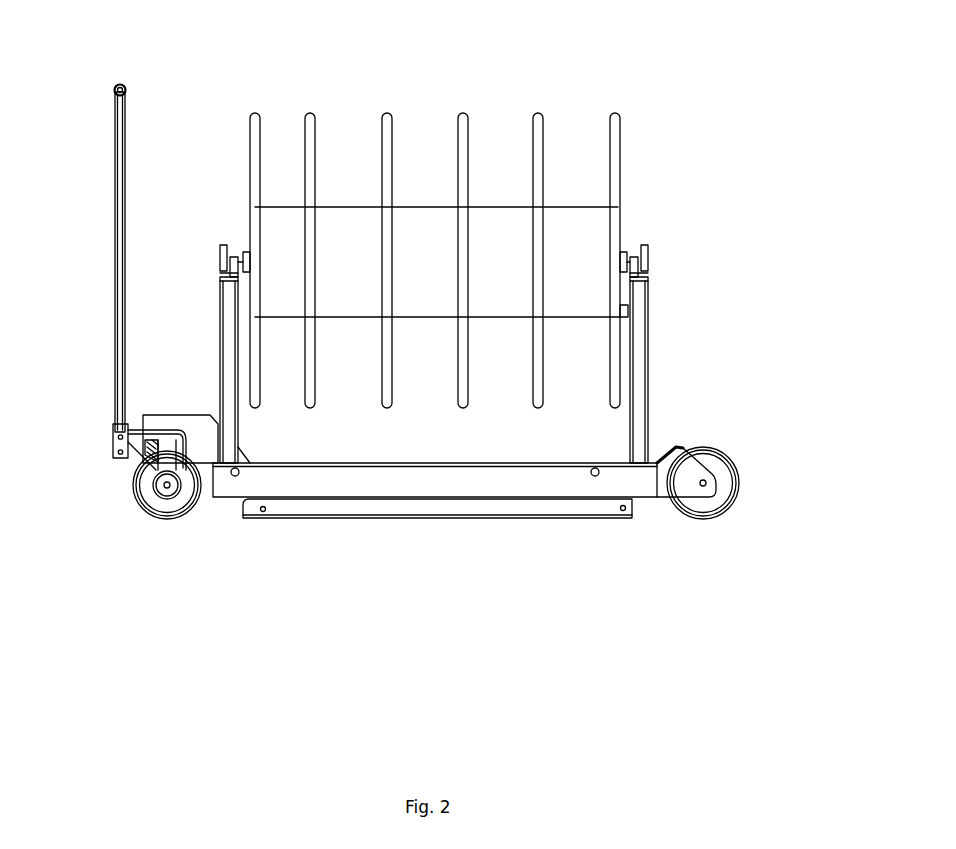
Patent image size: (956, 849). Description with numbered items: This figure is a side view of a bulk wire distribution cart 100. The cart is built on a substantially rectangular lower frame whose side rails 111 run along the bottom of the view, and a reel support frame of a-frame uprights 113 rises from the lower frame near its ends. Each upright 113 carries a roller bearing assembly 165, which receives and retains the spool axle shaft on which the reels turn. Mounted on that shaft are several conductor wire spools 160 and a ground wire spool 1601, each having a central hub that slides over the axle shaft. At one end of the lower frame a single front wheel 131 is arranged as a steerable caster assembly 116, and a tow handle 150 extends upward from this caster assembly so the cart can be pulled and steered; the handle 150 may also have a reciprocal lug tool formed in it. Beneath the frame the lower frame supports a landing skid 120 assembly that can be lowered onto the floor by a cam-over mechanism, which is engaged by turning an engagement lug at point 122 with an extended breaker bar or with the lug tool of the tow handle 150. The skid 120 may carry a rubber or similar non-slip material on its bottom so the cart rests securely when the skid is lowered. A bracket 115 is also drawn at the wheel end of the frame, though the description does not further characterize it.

The bulk wire distribution cart 100 is at (507, 90).
The tow handle 150 is at (114, 162).
The ground wire spool 1601 is at (262, 112).
The conductor wire spools 160 is at (394, 112).
The roller bearing assembly 165 is at (655, 249).
The a-frame uprights 113 is at (657, 357).
The steerable caster assembly 116 is at (156, 413).
The front wheel 131 is at (146, 501).
The right caster bracket 115 is at (688, 443).
The side rails 111 is at (474, 488).
The engagement lug point 122 is at (601, 478).
The landing skid 120 is at (407, 521).